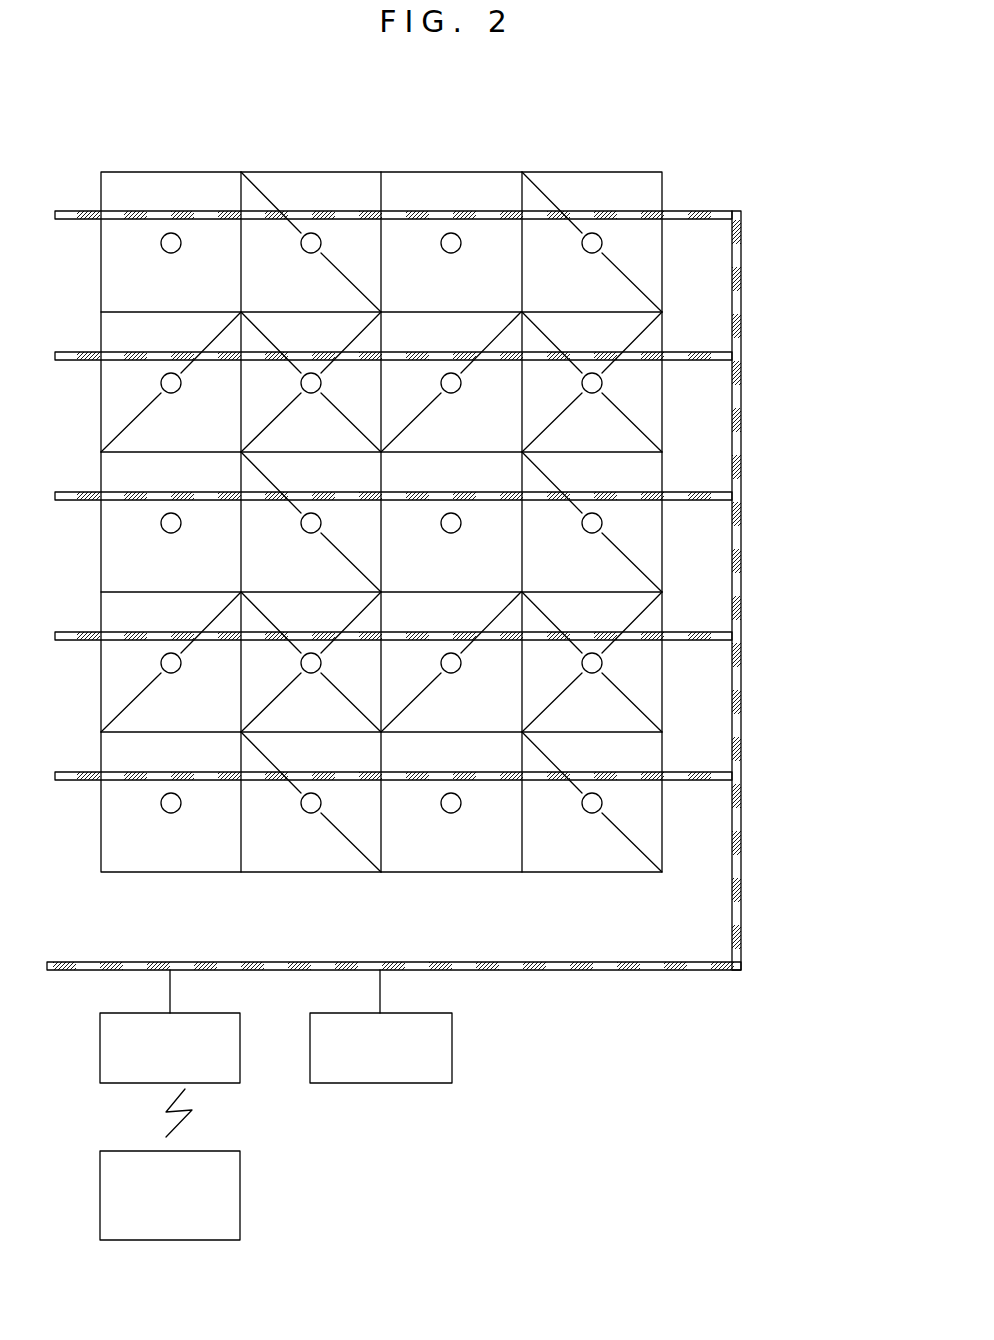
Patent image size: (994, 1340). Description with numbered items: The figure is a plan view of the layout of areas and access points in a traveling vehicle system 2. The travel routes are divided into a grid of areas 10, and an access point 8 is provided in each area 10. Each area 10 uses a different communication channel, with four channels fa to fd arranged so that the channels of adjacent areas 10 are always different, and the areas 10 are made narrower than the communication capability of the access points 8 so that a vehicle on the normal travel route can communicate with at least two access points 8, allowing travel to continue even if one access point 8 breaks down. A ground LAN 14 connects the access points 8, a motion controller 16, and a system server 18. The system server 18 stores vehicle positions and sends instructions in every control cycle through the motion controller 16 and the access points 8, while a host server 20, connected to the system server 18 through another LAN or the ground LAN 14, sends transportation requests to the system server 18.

The traveling vehicle system 2 is at (432, 1184).
The access point 8 is at (391, 542).
The area 10 is at (278, 182).
The ground LAN 14 is at (742, 612).
The motion controller 16 is at (455, 1047).
The system server 18 is at (242, 1048).
The host server 20 is at (242, 1192).